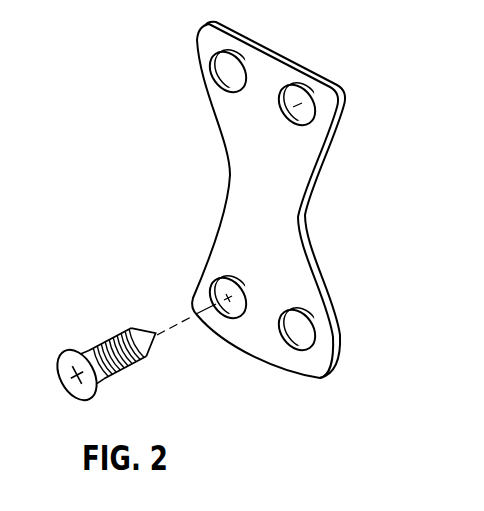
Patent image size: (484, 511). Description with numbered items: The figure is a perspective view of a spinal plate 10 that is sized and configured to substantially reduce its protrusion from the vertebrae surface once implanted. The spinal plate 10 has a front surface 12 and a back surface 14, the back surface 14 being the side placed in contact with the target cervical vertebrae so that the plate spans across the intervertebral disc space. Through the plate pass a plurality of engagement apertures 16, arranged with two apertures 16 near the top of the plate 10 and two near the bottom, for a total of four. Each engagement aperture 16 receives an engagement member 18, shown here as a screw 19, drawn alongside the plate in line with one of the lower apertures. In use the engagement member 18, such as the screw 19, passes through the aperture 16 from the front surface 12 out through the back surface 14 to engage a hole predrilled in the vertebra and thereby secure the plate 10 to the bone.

The spinal plate 10 is at (271, 200).
The front surface 12 is at (260, 223).
The back surface 14 is at (315, 182).
The engagement aperture 16 is at (297, 105).
The engagement member 18 is at (79, 401).
The screw 19 is at (98, 351).